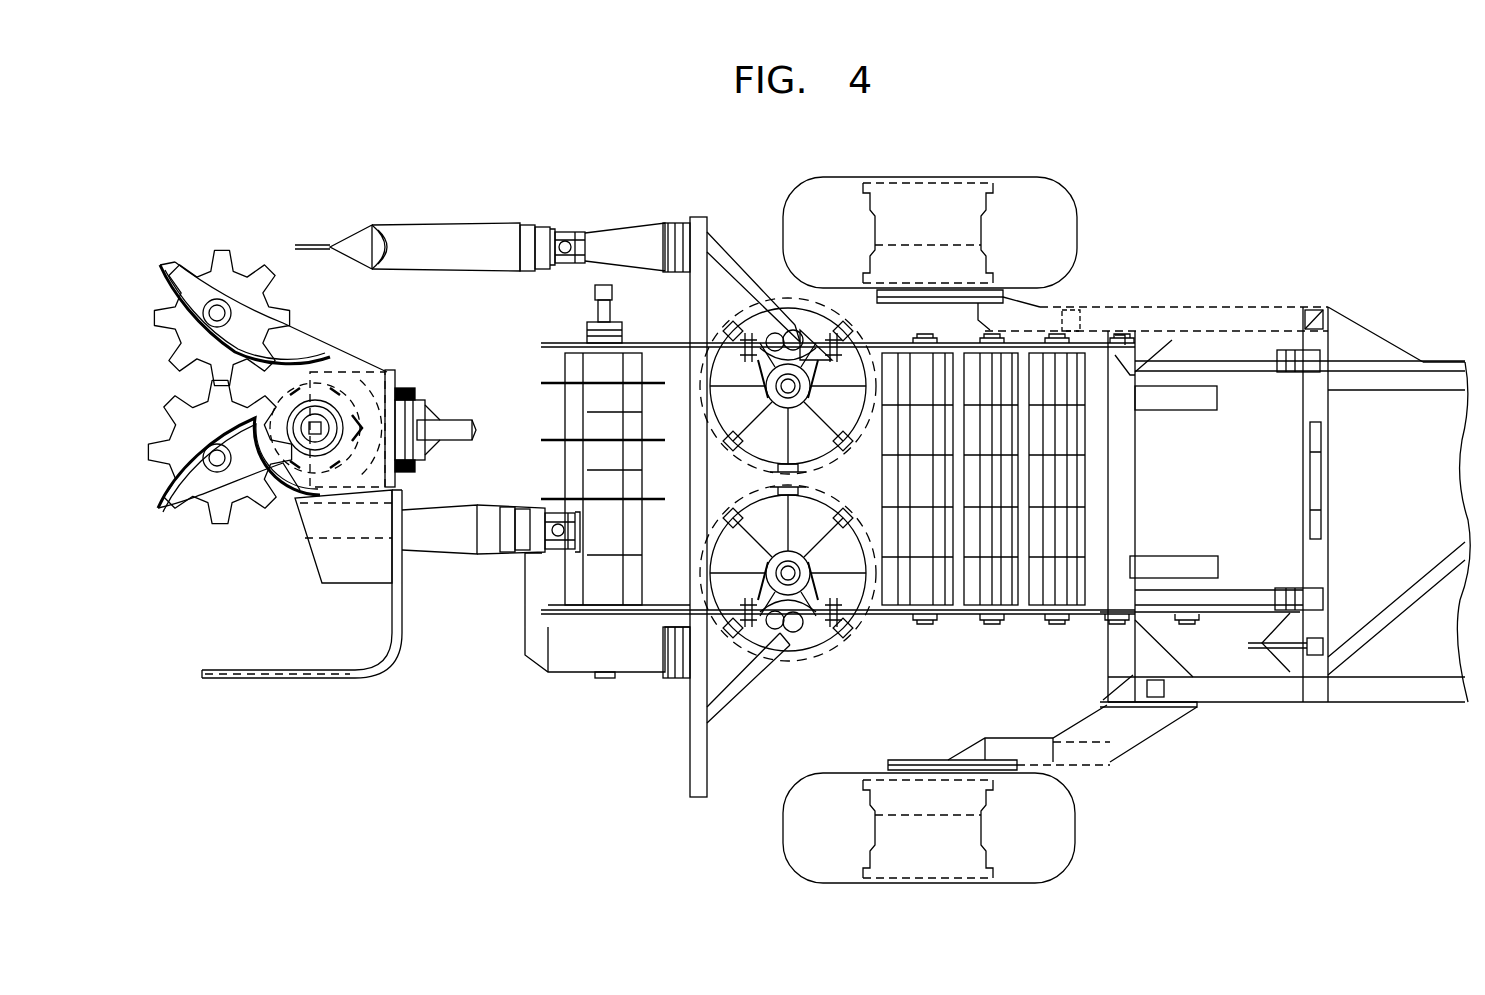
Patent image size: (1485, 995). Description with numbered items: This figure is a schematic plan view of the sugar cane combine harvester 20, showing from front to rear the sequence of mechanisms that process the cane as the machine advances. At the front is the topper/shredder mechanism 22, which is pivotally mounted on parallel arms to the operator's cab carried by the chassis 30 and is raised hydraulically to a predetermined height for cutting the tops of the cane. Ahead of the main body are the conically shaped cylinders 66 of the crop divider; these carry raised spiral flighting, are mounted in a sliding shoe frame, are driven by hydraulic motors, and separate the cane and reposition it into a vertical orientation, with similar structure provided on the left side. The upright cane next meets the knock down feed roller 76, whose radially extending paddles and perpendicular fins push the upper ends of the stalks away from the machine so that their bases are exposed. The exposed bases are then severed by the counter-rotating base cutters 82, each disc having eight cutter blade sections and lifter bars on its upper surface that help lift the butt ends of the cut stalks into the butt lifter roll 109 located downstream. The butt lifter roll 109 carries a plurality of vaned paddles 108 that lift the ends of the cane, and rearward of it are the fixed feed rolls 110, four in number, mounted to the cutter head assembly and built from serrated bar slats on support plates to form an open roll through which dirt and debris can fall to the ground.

The sugar cane combine harvester 20 is at (1150, 190).
The topper/shredder mechanism 22 is at (252, 242).
The chassis 30 is at (1328, 706).
The conically shaped cylinders 66 is at (466, 232).
The knock down feed roller 76 is at (622, 572).
The base cutters 82 is at (854, 421).
The vaned paddles 108 is at (883, 474).
The butt lifter roll 109 is at (918, 624).
The fixed feed rolls 110 is at (1180, 630).